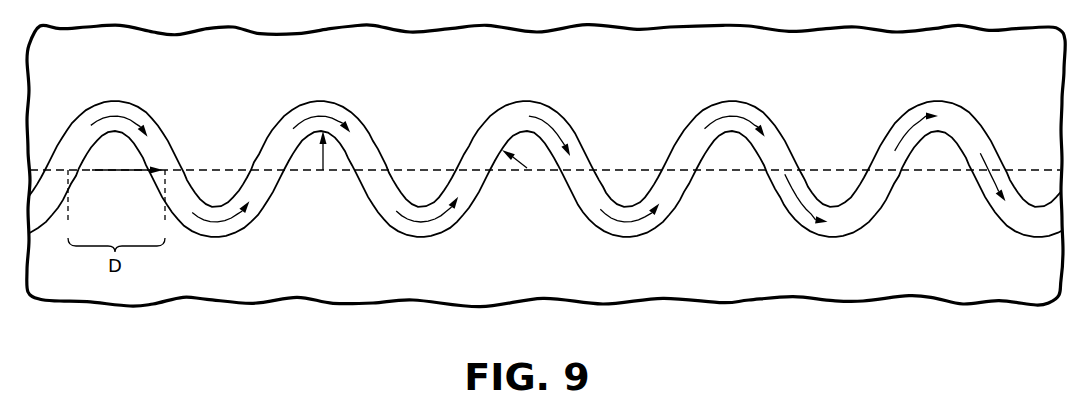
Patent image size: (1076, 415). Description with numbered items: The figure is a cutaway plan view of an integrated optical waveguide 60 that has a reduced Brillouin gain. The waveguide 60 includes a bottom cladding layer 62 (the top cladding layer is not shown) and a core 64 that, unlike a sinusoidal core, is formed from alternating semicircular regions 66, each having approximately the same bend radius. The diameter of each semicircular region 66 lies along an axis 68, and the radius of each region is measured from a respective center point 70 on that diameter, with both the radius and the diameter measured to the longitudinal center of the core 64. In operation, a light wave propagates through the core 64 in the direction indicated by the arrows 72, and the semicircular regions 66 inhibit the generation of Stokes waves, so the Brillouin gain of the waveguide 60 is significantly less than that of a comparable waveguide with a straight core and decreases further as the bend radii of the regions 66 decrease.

The integrated optical waveguide 60 is at (89, 333).
The bottom cladding layer 62 is at (748, 286).
The core 64 is at (547, 169).
The semicircular regions 66 is at (113, 86).
The axis 68 is at (611, 168).
The center point 70 is at (321, 170).
The arrows 72 is at (568, 134).